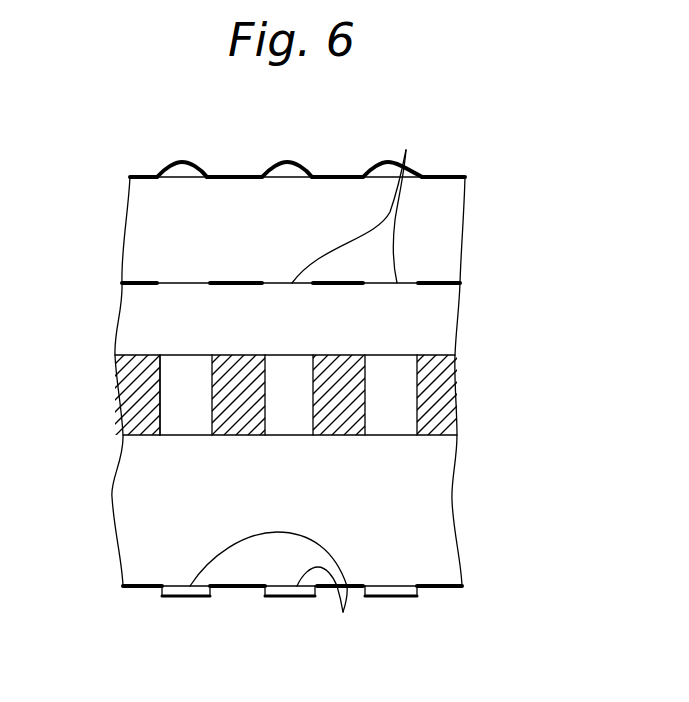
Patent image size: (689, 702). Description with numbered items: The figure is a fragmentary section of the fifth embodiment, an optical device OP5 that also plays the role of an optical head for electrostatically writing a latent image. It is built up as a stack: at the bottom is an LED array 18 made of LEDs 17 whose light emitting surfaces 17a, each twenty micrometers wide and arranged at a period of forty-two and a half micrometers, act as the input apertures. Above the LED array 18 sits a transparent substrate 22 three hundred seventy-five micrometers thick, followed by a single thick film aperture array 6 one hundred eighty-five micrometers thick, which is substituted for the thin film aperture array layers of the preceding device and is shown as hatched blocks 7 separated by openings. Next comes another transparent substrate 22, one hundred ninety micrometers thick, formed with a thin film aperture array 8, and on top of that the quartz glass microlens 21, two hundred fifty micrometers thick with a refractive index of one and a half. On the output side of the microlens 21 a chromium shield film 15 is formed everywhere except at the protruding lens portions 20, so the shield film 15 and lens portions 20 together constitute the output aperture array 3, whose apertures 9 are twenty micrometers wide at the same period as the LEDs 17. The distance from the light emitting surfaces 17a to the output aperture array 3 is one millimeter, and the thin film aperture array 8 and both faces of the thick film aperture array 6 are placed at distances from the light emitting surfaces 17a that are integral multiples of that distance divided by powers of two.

The output aperture array 3 is at (142, 177).
The lens portions 20 is at (280, 163).
The shield film 15 is at (340, 177).
The apertures 9 is at (355, 200).
The optical device OP5 is at (493, 197).
The microlens 21 is at (133, 242).
The thin film aperture array 8 is at (440, 283).
The transparent substrate 22 is at (432, 318).
The thick film aperture array 6 is at (120, 378).
The support block 7 is at (172, 408).
The LED array 18 is at (145, 590).
The LEDs 17 is at (278, 597).
The light emitting surfaces 17a is at (287, 591).